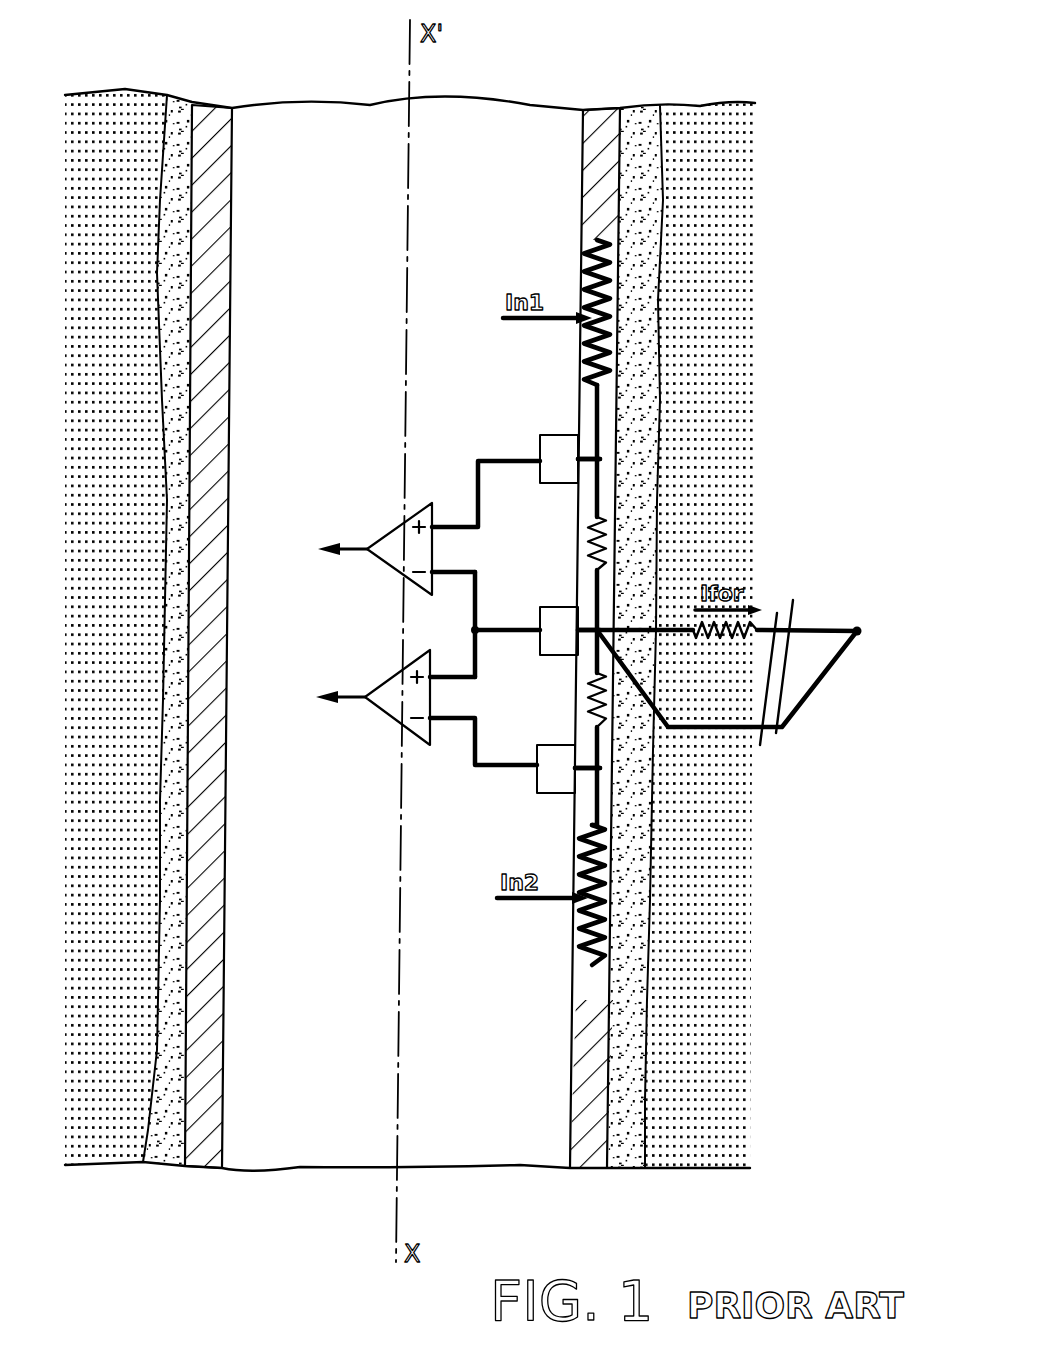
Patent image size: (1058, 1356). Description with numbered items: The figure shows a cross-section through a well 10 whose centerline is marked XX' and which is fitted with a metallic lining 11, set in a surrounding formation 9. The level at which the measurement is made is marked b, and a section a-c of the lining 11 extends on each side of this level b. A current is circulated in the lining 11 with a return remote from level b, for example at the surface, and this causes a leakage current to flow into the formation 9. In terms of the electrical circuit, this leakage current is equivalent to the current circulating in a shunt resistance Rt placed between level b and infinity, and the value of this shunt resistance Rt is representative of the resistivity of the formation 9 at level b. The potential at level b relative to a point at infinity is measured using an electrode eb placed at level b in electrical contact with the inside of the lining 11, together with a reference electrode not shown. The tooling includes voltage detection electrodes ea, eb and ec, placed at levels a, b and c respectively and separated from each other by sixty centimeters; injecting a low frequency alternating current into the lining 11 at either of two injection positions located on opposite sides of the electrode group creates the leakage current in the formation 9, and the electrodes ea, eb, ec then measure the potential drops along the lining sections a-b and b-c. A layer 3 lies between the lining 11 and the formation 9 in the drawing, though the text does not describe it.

The formation 9 is at (745, 125).
The metallic lining 11 is at (215, 120).
The well 10 is at (338, 155).
The cement / electrode layer 3 is at (640, 130).
The voltage detection electrode ea is at (560, 452).
The voltage detection electrode eb is at (560, 625).
The voltage detection electrode ec is at (550, 760).
The level a is at (578, 459).
The level b is at (600, 628).
The level c is at (580, 768).
The shunt resistance Rt is at (712, 640).